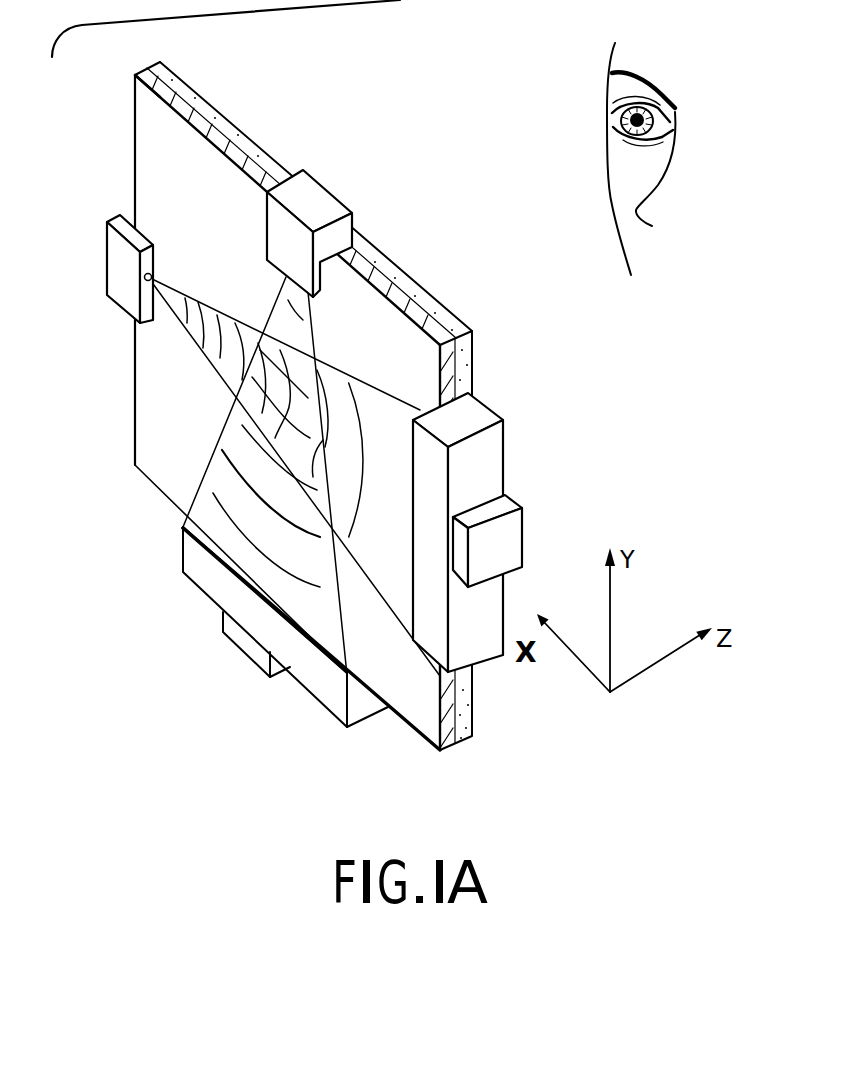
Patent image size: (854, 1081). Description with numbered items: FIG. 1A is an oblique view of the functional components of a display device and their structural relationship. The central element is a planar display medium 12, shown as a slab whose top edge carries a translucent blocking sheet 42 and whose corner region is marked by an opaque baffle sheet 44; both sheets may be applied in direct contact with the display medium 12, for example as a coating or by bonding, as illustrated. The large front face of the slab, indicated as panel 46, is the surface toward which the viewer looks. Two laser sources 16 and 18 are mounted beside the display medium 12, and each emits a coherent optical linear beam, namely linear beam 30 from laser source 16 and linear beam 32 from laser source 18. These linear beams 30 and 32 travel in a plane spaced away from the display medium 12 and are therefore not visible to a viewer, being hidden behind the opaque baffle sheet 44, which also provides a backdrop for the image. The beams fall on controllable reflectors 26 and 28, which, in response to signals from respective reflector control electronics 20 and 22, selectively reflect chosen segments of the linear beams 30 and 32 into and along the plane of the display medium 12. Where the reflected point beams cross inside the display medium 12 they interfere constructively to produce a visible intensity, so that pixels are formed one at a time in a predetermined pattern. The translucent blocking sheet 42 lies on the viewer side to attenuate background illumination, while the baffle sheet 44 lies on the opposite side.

The display medium 12 is at (147, 62).
The laser source 16 is at (338, 193).
The laser source 18 is at (108, 268).
The reflector control electronics 20 is at (246, 643).
The reflector control electronics 22 is at (522, 520).
The controllable reflector 26 is at (185, 566).
The controllable reflector 28 is at (504, 432).
The linear beam 30 is at (195, 472).
The linear beam 32 is at (183, 340).
The translucent blocking sheet 42 is at (190, 88).
The opaque baffle sheet 44 is at (134, 76).
The transparent panel 46 is at (124, 146).